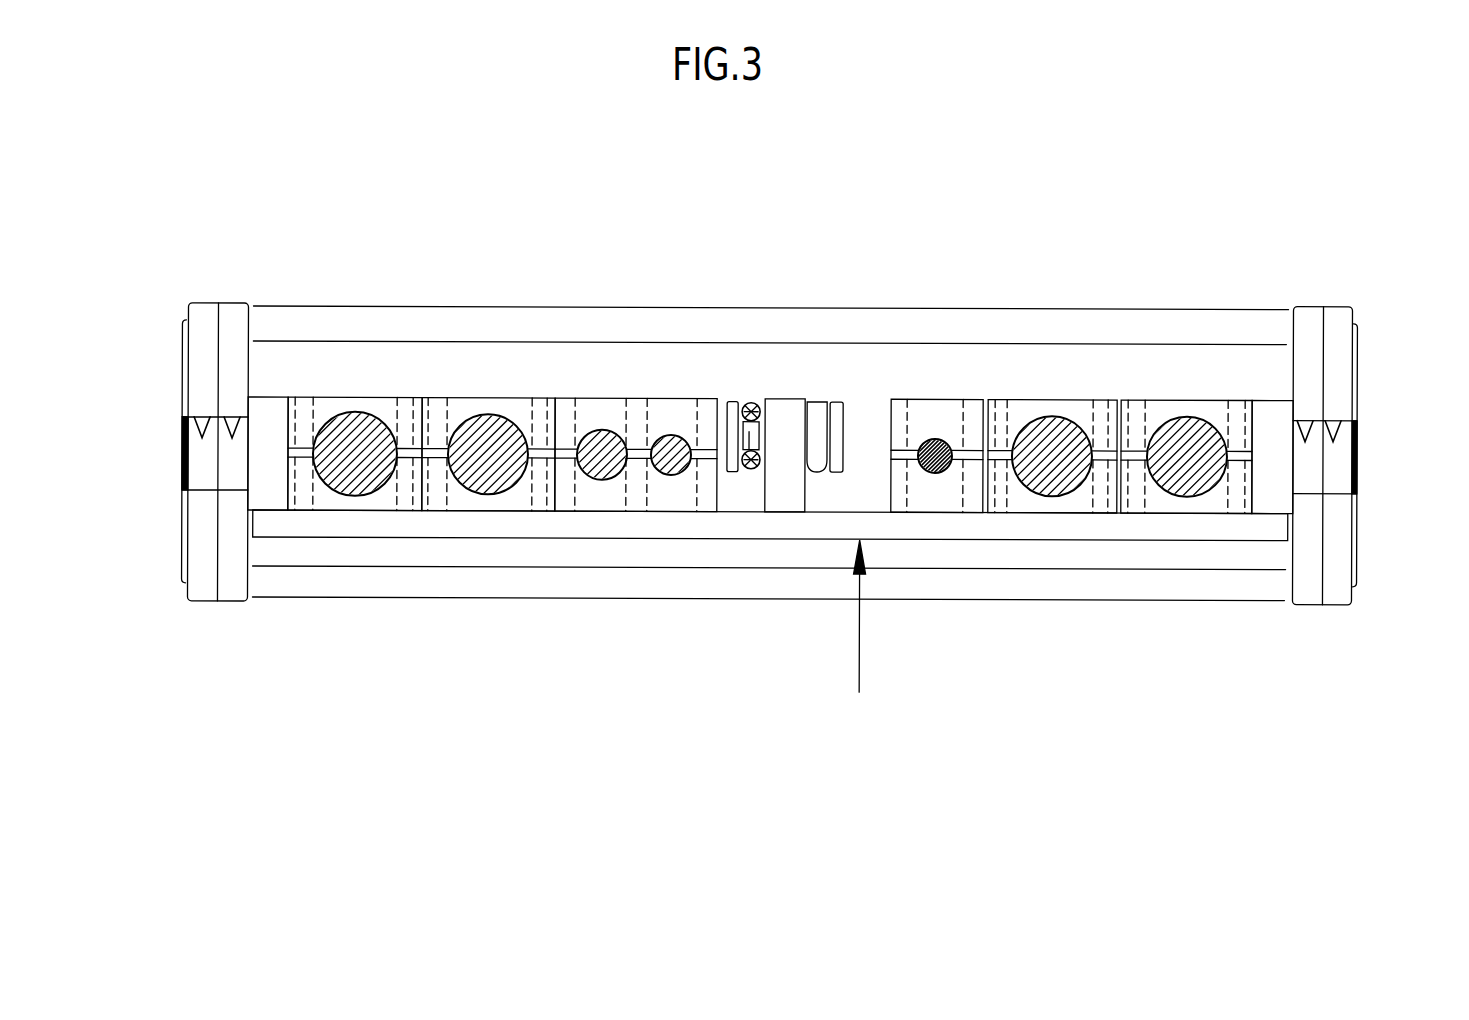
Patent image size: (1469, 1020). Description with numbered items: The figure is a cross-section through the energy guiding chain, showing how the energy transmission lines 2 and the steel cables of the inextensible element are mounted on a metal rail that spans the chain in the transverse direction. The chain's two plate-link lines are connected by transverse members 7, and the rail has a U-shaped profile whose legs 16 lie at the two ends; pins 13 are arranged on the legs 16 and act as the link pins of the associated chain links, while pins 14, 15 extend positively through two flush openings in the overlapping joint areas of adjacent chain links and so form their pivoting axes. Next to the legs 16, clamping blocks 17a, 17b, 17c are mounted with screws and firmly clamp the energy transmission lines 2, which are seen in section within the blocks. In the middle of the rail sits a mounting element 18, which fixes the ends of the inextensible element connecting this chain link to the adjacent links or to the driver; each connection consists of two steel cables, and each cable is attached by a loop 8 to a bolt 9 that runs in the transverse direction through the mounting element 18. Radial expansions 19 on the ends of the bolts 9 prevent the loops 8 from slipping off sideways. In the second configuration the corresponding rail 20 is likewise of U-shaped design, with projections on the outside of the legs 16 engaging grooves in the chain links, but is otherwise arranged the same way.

The energy transmission lines 2 is at (843, 329).
The transverse members 7 is at (398, 325).
The loop 8 is at (749, 437).
The bolts 9 is at (750, 473).
The pins 13 is at (202, 465).
The pin 14 is at (202, 437).
The pin 15 is at (233, 437).
The legs 16 is at (271, 432).
The clamping block 17a is at (748, 573).
The clamping block 17b is at (608, 512).
The clamping block 17c is at (935, 508).
The mounting element 18 is at (782, 482).
The radial expansions 19 is at (732, 435).
The rail 20 is at (856, 644).